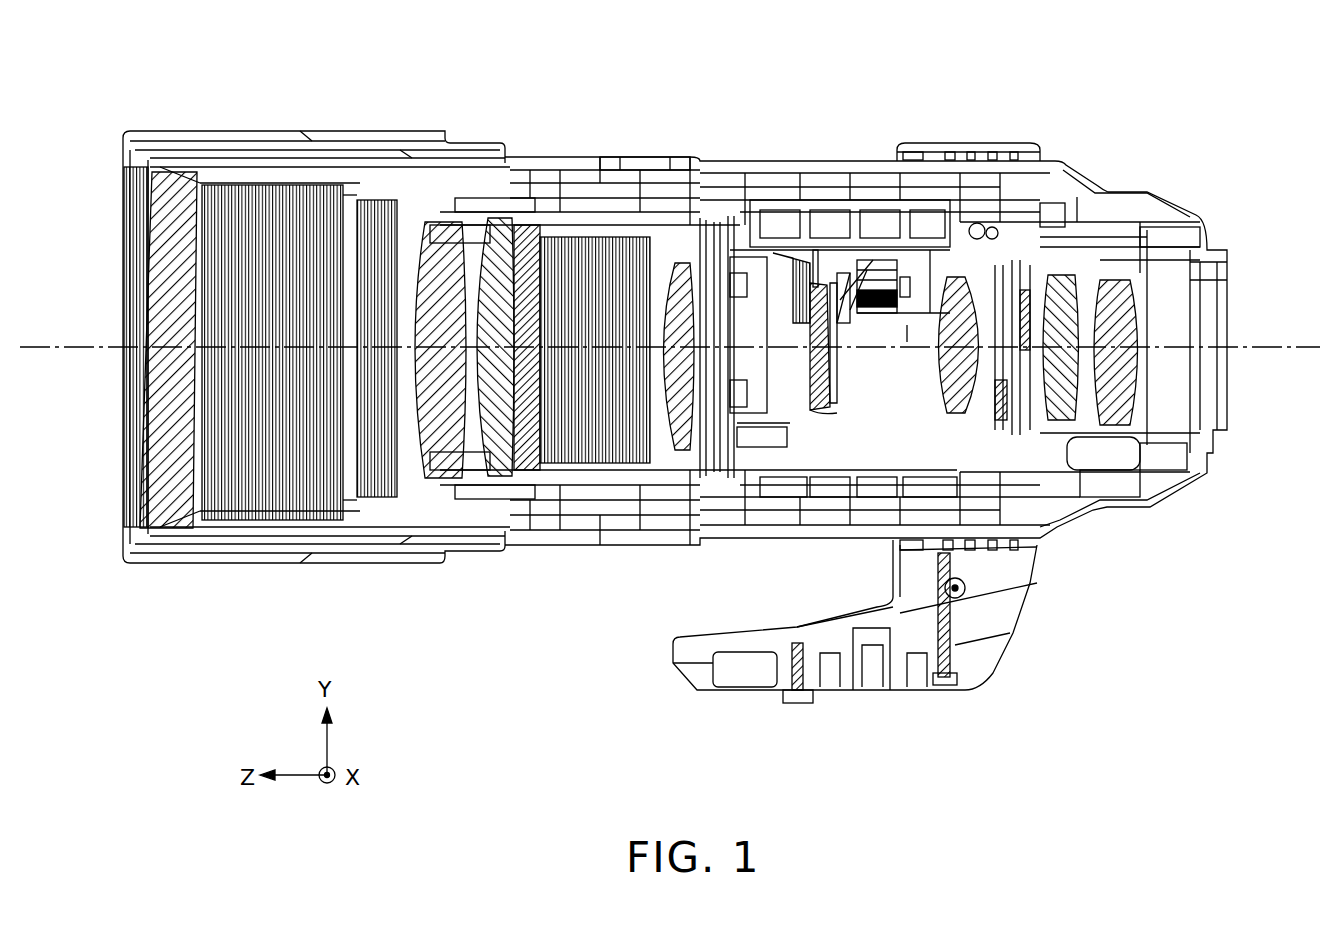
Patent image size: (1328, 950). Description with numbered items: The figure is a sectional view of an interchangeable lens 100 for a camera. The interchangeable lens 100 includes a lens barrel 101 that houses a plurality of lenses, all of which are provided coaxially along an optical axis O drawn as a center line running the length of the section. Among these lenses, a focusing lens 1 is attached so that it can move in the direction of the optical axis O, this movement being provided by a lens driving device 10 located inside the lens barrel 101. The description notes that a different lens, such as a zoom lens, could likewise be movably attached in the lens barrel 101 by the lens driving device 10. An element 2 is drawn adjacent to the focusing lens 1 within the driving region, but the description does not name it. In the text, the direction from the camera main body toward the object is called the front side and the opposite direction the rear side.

The interchangeable lens 100 is at (790, 82).
The lens barrel 101 is at (655, 157).
The focusing lens 1 is at (840, 408).
The sensor holding plate 2 is at (852, 412).
The lens driving device 10 is at (865, 335).
The optical axis O is at (1266, 347).